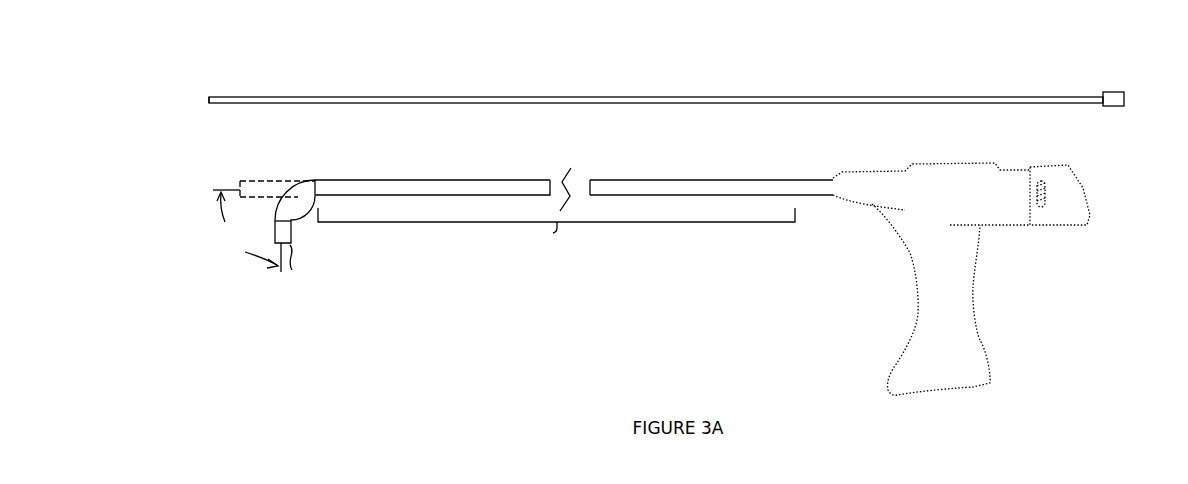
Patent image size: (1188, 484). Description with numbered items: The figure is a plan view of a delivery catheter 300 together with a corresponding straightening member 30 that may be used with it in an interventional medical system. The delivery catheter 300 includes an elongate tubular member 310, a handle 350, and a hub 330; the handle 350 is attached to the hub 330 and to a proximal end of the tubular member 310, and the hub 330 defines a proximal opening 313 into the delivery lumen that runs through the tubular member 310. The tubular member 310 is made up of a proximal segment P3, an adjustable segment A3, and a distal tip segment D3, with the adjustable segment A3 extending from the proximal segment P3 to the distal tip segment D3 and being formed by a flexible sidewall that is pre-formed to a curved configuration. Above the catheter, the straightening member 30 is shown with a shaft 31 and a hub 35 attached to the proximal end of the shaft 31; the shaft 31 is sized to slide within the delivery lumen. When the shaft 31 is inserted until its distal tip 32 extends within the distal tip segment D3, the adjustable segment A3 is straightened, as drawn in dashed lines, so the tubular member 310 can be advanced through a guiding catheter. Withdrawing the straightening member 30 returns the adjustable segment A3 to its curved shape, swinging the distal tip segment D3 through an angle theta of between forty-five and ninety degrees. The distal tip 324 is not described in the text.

The straightening member 30 is at (641, 73).
The shaft 31 is at (722, 100).
The distal tip 32 is at (209, 97).
The hub 35 is at (1108, 95).
The delivery catheter 300 is at (674, 256).
The elongate tubular member 310 is at (574, 173).
The proximal opening 313 is at (1082, 190).
The angled distal tip 324 is at (264, 238).
The hub 330 is at (1013, 184).
The handle 350 is at (937, 300).
The adjustable segment A3 is at (290, 200).
The distal tip segment D3 is at (287, 232).
The proximal segment P3 is at (556, 235).